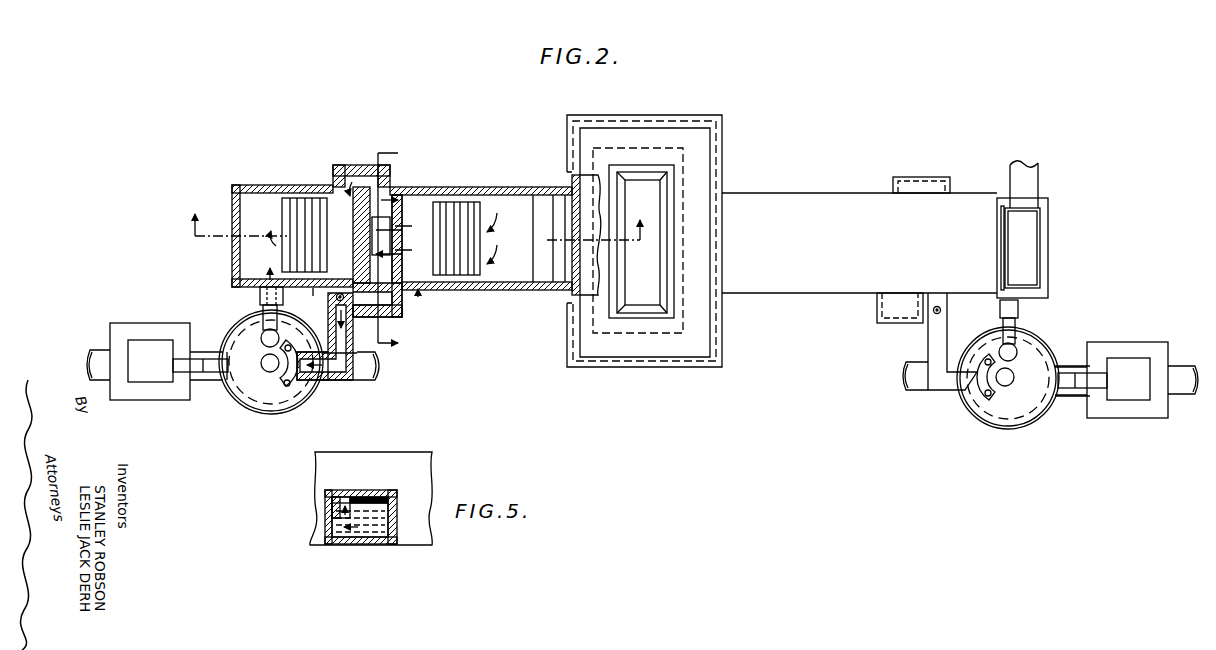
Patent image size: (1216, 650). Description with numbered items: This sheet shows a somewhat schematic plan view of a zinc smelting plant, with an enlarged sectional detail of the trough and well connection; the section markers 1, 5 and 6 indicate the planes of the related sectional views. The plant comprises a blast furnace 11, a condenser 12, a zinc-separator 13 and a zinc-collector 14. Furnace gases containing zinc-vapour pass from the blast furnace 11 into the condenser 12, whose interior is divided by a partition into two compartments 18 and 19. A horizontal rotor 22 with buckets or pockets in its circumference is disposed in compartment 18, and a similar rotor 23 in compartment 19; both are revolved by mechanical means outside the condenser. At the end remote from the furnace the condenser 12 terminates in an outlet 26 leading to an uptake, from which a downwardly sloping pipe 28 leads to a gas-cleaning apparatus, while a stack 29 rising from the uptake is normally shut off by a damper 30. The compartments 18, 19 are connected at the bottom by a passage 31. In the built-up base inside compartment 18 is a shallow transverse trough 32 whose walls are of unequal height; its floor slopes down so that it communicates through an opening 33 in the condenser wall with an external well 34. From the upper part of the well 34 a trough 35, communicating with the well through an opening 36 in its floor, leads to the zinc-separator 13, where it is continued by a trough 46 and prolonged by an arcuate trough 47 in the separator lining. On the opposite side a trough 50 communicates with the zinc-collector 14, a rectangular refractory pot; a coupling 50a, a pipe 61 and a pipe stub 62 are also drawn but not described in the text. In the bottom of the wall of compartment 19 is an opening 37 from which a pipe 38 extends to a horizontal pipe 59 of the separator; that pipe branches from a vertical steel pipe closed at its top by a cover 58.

In FIG. 2, the section line 1- 1 is at (415, 228).
In FIG. 2, the section line 5- 5 is at (364, 296).
In FIG. 2, the section line 6- 6 is at (388, 248).
In FIG. 2, the blast furnace 11 is at (632, 116).
In FIG. 2, the condenser 12 is at (736, 191).
In FIG. 5, the condenser 12 is at (364, 452).
In FIG. 2, the zinc-separator 13 is at (263, 414).
In FIG. 2, the zinc-collector 14 is at (142, 404).
In FIG. 2, the compartment 18 is at (516, 216).
In FIG. 2, the compartment 19 is at (261, 206).
In FIG. 2, the horizontal rotor 22 is at (458, 214).
In FIG. 2, the rotor 23 is at (300, 236).
In FIG. 2, the outlet 26 is at (1049, 243).
In FIG. 2, the downwardly sloping pipe 28 is at (1027, 178).
In FIG. 2, the stack 29 is at (1041, 218).
In FIG. 2, the damper 30 is at (1000, 241).
In FIG. 2, the passage 31 is at (352, 174).
In FIG. 2, the shallow transverse trough 32 is at (384, 252).
In FIG. 2, the opening 33 is at (386, 306).
In FIG. 5, the opening 33 is at (379, 538).
In FIG. 2, the external well 34 is at (396, 314).
In FIG. 5, the external well 34 is at (379, 507).
In FIG. 2, the trough 35 is at (347, 382).
In FIG. 5, the trough 35 is at (340, 497).
In FIG. 2, the opening 36 is at (336, 298).
In FIG. 5, the opening 36 is at (327, 533).
In FIG. 2, the opening 37 is at (268, 279).
In FIG. 2, the pipe 38 is at (261, 296).
In FIG. 2, the trough 46 is at (320, 373).
In FIG. 2, the arcuate trough 47 is at (293, 392).
In FIG. 2, the trough 50 is at (184, 374).
In FIG. 2, the coupling 50a is at (208, 374).
In FIG. 2, the cover 58 is at (262, 338).
In FIG. 2, the horizontal pipe 59 is at (264, 312).
In FIG. 2, the pipe 61 is at (1063, 365).
In FIG. 2, the pipe stub 62 is at (902, 377).